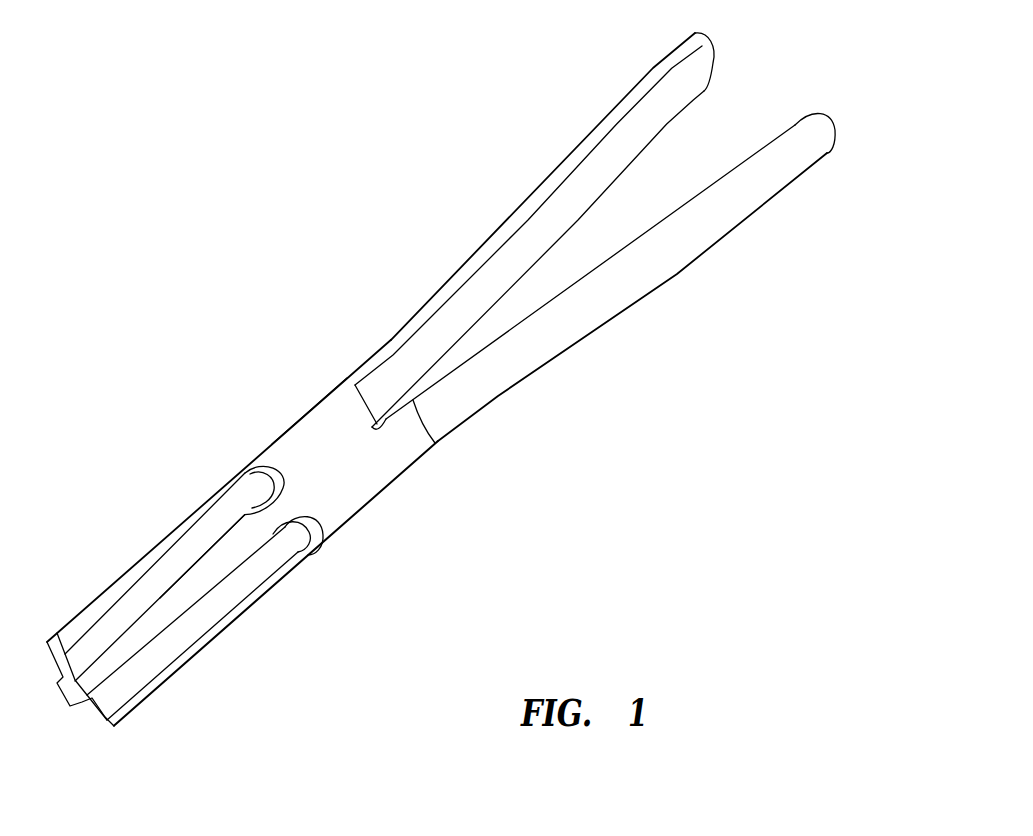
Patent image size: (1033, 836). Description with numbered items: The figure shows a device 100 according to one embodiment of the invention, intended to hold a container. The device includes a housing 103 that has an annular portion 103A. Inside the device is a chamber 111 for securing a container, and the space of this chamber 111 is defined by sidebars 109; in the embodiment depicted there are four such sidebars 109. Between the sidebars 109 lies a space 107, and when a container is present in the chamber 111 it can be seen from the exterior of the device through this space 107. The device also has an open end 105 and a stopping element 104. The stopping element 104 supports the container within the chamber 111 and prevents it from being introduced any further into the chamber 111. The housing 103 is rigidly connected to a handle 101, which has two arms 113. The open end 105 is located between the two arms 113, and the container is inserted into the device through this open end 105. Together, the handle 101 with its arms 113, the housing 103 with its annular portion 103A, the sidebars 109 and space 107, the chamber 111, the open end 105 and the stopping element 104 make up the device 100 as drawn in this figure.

The surgical instrument 100 is at (318, 229).
The handle 101 is at (830, 112).
The housing 103 is at (350, 467).
The annular portion 103A is at (315, 398).
The stopping element 104 is at (58, 702).
The open end 105 is at (358, 417).
The space 107 is at (150, 595).
The sidebars 109 is at (213, 572).
The chamber 111 is at (187, 560).
The arms 113 is at (568, 153).